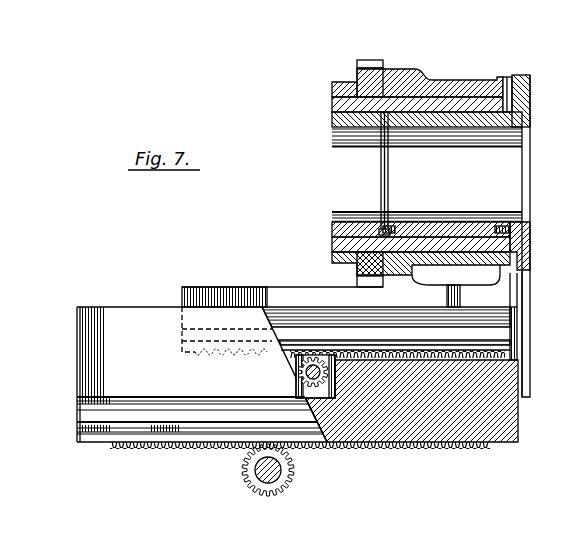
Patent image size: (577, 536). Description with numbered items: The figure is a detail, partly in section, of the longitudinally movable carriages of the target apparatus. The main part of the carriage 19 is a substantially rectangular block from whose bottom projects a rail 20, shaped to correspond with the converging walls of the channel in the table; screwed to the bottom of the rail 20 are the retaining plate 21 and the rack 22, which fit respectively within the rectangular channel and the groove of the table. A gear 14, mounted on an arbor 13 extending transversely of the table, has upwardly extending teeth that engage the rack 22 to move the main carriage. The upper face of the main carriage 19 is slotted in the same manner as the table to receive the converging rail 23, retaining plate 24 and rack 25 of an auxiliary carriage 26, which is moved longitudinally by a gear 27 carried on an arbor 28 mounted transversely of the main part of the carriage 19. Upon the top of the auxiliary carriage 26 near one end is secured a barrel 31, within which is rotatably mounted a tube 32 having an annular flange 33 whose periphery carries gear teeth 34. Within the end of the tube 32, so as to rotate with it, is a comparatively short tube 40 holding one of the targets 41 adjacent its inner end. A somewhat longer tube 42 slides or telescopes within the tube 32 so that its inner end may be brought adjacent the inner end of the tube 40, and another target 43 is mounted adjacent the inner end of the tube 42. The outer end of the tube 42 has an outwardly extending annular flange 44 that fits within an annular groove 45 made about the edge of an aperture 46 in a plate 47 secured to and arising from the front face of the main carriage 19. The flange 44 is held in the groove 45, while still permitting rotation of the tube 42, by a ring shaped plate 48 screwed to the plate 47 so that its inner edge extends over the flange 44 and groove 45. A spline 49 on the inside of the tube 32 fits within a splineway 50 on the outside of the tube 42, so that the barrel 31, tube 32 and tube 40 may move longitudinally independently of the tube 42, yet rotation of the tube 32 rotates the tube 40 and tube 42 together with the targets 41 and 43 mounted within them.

The arbor 13 is at (263, 472).
The gear 14 is at (288, 486).
The main part of the carriage 19 is at (125, 317).
The rail 20 is at (93, 412).
The retaining plate 21 is at (182, 425).
The rack 22 is at (220, 448).
The converging rail 23 is at (323, 313).
The retaining plate 24 is at (478, 337).
The rack 25 is at (490, 347).
The auxiliary carriage 26 is at (236, 300).
The gear 27 is at (298, 367).
The arbor 28 is at (327, 380).
The barrel 31 is at (452, 81).
The tube 32 is at (333, 245).
The annular flange 33 is at (342, 82).
The gear teeth 34 is at (375, 60).
The short tube 40 is at (352, 222).
The target 41 is at (380, 177).
The tube 42 is at (505, 132).
The target 43 is at (389, 152).
The annular flange 44 is at (530, 105).
The annular groove 45 is at (521, 90).
The aperture 46 is at (528, 222).
The plate 47 is at (520, 295).
The ring shaped plate 48 is at (510, 76).
The spline 49 is at (463, 232).
The splineway 50 is at (500, 227).